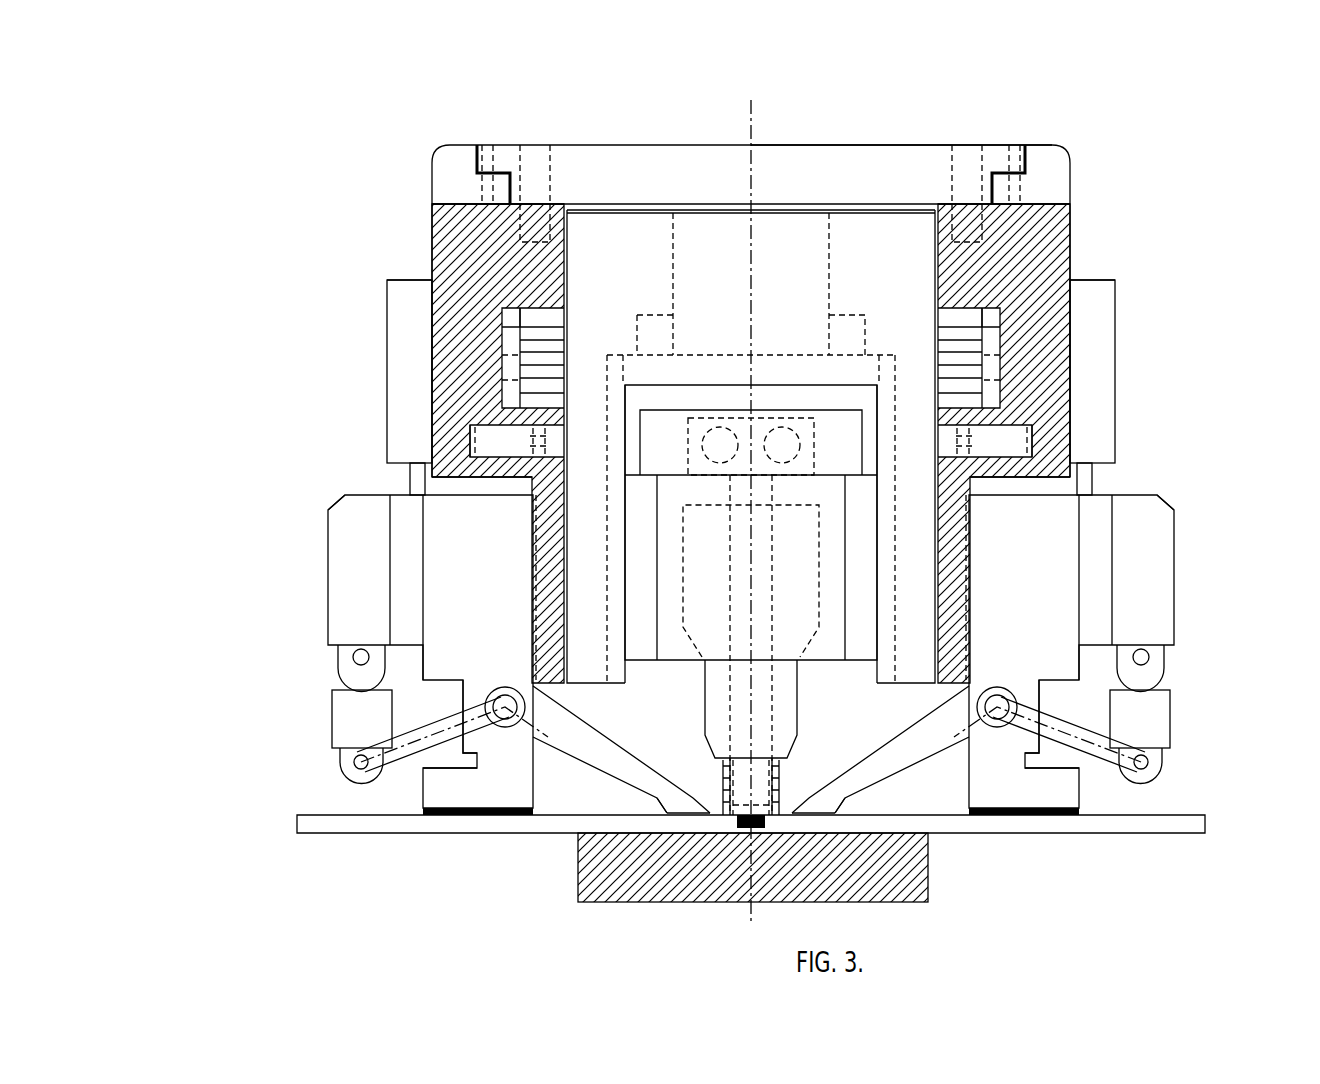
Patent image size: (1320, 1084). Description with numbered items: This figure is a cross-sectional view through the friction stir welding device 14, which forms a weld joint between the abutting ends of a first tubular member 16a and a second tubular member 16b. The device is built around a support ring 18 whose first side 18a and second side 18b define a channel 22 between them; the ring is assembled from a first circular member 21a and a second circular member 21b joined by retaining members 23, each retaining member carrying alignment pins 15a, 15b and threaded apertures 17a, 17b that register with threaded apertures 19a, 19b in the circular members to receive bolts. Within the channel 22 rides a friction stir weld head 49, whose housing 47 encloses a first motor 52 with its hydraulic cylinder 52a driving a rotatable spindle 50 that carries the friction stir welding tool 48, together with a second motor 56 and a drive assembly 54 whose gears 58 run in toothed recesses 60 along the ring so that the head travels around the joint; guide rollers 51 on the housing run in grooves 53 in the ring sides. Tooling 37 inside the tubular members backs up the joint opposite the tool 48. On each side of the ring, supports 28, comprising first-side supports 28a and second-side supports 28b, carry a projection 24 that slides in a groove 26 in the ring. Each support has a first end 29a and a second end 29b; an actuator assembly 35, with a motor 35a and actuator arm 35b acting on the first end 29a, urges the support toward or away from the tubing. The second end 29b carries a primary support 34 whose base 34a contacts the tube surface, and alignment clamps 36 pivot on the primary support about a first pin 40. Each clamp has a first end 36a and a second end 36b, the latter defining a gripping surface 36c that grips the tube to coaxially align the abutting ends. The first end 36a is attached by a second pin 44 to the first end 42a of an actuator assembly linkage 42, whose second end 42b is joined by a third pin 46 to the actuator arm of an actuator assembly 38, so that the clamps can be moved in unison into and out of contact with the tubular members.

The friction stir welding device 14 is at (1103, 240).
The alignment pin 15a is at (1030, 145).
The alignment pin 15b is at (490, 165).
The first tubular member 16a is at (335, 826).
The second tubular member 16b is at (1185, 828).
The threaded aperture 17a is at (968, 180).
The threaded aperture 17b is at (538, 172).
The support ring 18 is at (455, 178).
The first side of support ring 18a is at (1072, 217).
The second side of support ring 18b is at (441, 213).
The threaded aperture 19a is at (937, 224).
The threaded aperture 19b is at (565, 222).
The first circular member 21a is at (1070, 263).
The second circular member 21b is at (447, 247).
The channel 22 is at (845, 207).
The retaining member 23 is at (948, 148).
The projection 24 is at (530, 548).
The groove 26 is at (570, 523).
The support 28 is at (455, 558).
The first-side support 28a is at (442, 585).
The second-side support 28b is at (1063, 592).
The first end of support 29a is at (473, 512).
The second end of support 29b is at (522, 787).
The primary support 34 is at (475, 795).
The base 34a is at (437, 800).
The actuator assembly 35 is at (382, 435).
The motor 35a is at (400, 393).
The actuator arm 35b is at (420, 478).
The alignment clamp 36 is at (625, 750).
The first end of alignment clamp 36a is at (378, 758).
The second end of alignment clamp 36b is at (818, 793).
The gripping surface 36c is at (833, 822).
The tooling 37 is at (935, 850).
The actuator assembly 38 is at (342, 608).
The first pin 40 is at (503, 690).
The actuator assembly linkage 42 is at (340, 724).
The first end of actuator assembly linkage 42a is at (330, 777).
The second end of actuator assembly linkage 42b is at (340, 683).
The second pin 44 is at (353, 761).
The third pin 46 is at (353, 657).
The housing 47 is at (617, 213).
The friction stir welding tool 48 is at (760, 827).
The friction stir weld head 49 is at (905, 290).
The rotatable spindle 50 is at (760, 690).
The guide roller 51 is at (513, 445).
The first motor 52 is at (822, 410).
The hydraulic cylinder 52a is at (695, 298).
The groove 53 is at (472, 427).
The drive assembly 54 is at (560, 383).
The second motor 56 is at (848, 335).
The gear 58 is at (560, 352).
The recess 60 is at (537, 317).